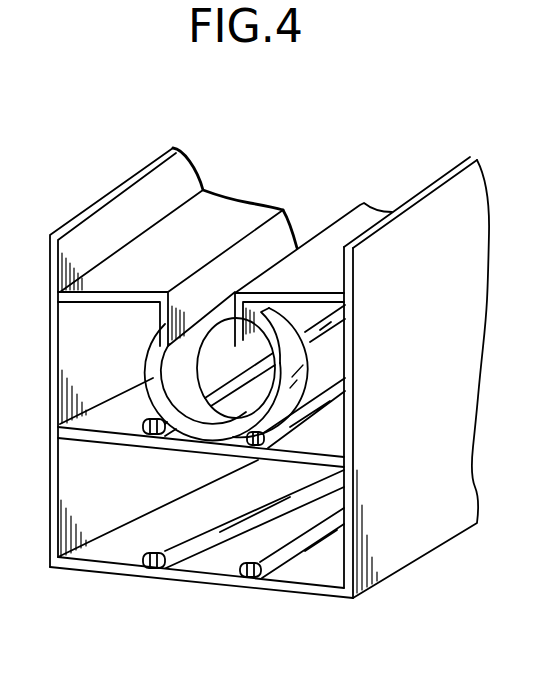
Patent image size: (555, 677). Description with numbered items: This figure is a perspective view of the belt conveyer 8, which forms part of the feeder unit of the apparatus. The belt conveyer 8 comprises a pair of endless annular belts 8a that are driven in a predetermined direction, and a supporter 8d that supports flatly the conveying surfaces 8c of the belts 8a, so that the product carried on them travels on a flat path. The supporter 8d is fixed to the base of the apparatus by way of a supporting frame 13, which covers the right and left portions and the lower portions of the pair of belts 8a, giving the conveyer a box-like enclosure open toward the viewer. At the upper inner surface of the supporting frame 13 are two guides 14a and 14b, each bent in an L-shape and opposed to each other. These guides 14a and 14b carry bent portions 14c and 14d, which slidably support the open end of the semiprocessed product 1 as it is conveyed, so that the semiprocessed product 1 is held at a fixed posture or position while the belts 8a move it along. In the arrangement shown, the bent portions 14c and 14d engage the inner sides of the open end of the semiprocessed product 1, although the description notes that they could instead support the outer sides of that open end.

The semiprocessed product 1 is at (153, 377).
The belt conveyer 8 is at (489, 373).
The endless annular belts 8a is at (237, 563).
The conveying surfaces 8c is at (253, 443).
The supporter 8d is at (92, 440).
The supporting frame 13 is at (413, 533).
The guide 14a is at (220, 214).
The guide 14b is at (368, 217).
The bent portion 14c is at (293, 238).
The bent portion 14d is at (251, 313).